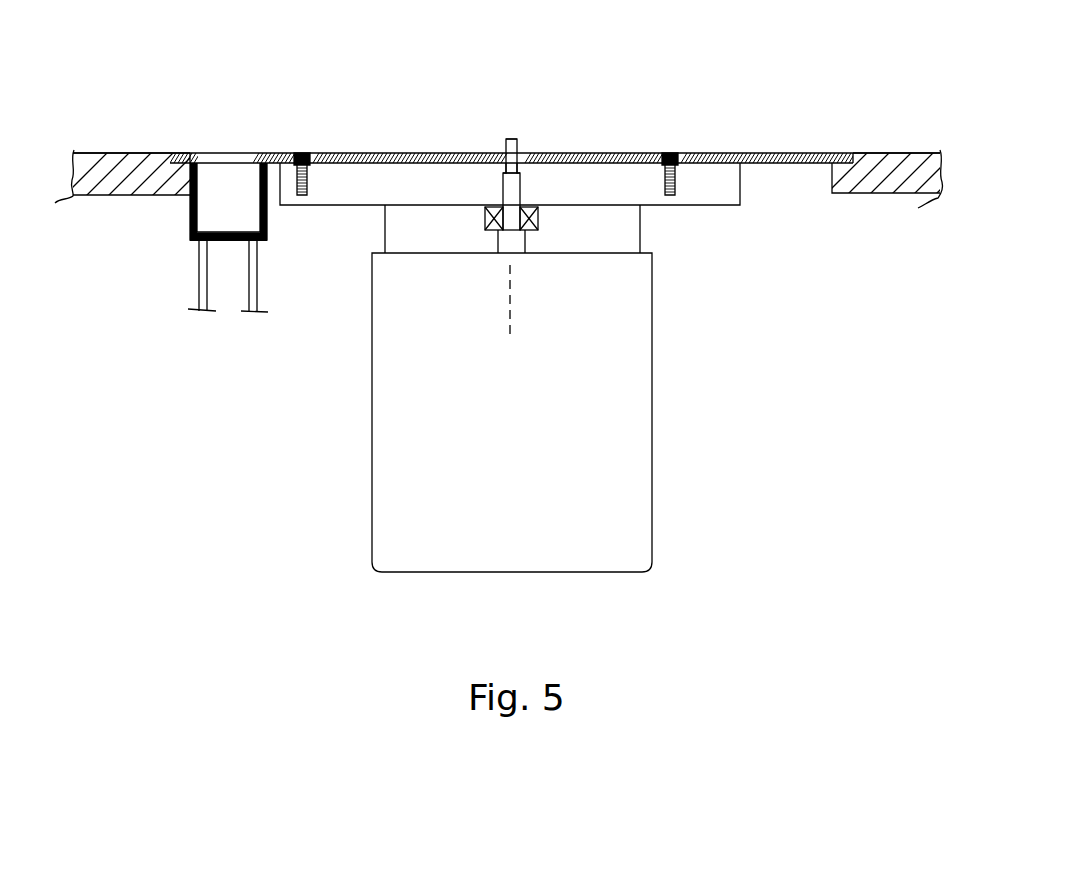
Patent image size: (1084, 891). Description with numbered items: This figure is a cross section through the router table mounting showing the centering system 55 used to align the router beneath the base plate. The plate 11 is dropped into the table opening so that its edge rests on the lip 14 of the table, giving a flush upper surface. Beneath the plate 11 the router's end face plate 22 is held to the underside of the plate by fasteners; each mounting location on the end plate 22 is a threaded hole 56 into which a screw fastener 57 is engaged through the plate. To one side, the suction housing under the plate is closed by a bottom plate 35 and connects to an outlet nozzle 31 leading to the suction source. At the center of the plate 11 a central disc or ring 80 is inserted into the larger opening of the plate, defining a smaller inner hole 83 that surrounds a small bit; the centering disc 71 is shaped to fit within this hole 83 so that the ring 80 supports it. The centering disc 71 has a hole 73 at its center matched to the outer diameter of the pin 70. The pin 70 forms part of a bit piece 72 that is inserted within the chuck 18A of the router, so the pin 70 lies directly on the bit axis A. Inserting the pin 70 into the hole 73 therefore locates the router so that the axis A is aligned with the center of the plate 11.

The centering system 55 is at (592, 72).
The plate 11 is at (190, 153).
The lip 14 is at (143, 196).
The outlet nozzle 31 is at (200, 273).
The bottom plate 35 is at (268, 232).
The central disc 80 is at (415, 153).
The pin 70 is at (507, 148).
The centering disc 71 is at (537, 153).
The inner hole 83 is at (547, 153).
The screw fastener 57 is at (672, 152).
The hole 73 is at (500, 165).
The bit piece 72 is at (513, 185).
The end face plate 22 is at (698, 204).
The threaded hole 56 is at (683, 180).
The chuck 18A is at (512, 412).
The bit axis A is at (510, 298).